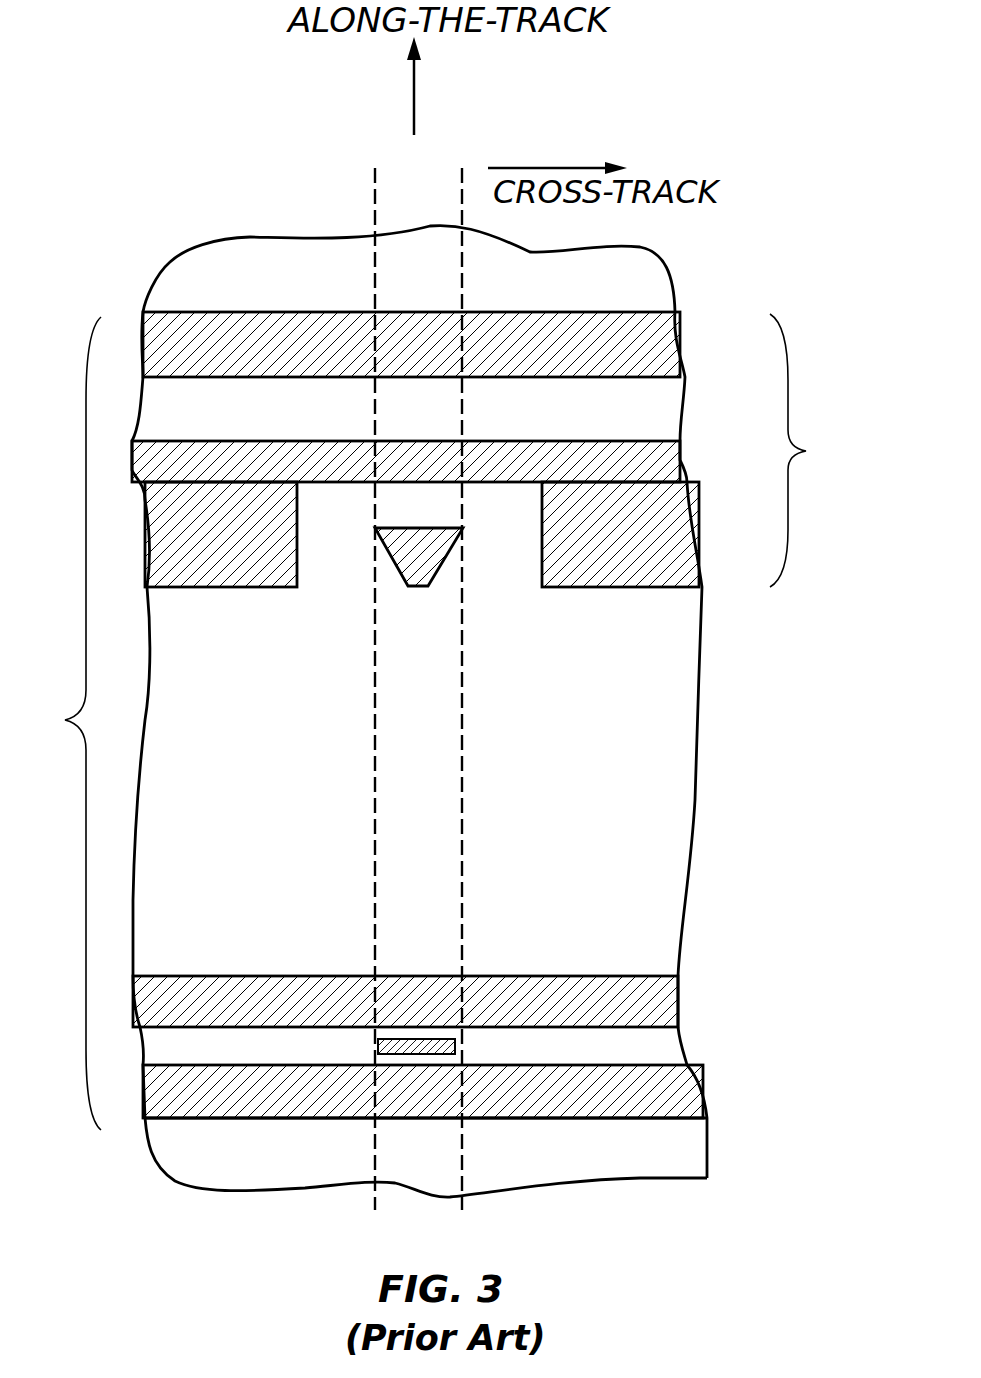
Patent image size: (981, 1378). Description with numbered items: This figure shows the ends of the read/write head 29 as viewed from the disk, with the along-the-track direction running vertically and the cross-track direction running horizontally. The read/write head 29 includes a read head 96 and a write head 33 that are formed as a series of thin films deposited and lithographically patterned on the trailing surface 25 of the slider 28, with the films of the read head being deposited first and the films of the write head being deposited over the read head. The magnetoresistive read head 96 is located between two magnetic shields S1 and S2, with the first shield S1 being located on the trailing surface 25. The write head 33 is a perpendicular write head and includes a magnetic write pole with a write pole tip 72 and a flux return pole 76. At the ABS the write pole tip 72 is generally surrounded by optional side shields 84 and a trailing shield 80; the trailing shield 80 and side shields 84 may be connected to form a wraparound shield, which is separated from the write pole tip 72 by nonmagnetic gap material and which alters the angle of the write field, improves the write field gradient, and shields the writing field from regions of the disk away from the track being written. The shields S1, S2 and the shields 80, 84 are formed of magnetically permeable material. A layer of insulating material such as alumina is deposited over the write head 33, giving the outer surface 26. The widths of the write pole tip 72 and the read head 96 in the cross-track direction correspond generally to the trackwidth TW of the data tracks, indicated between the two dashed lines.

The outer surface 26 is at (645, 272).
The flux return pole 76 is at (648, 330).
The trailing shield 80 is at (667, 460).
The side shields 84 is at (215, 567).
The write pole tip 72 is at (420, 575).
The write head 33 is at (810, 450).
The read/write head 29 is at (62, 723).
The air bearing surface ABS is at (680, 737).
The second magnetic shield S2 is at (657, 1007).
The read head 96 is at (455, 1047).
The first magnetic shield S1 is at (665, 1085).
The trailing surface 25 is at (543, 1118).
The slider 28 is at (700, 1149).
The trackwidth TW is at (447, 192).